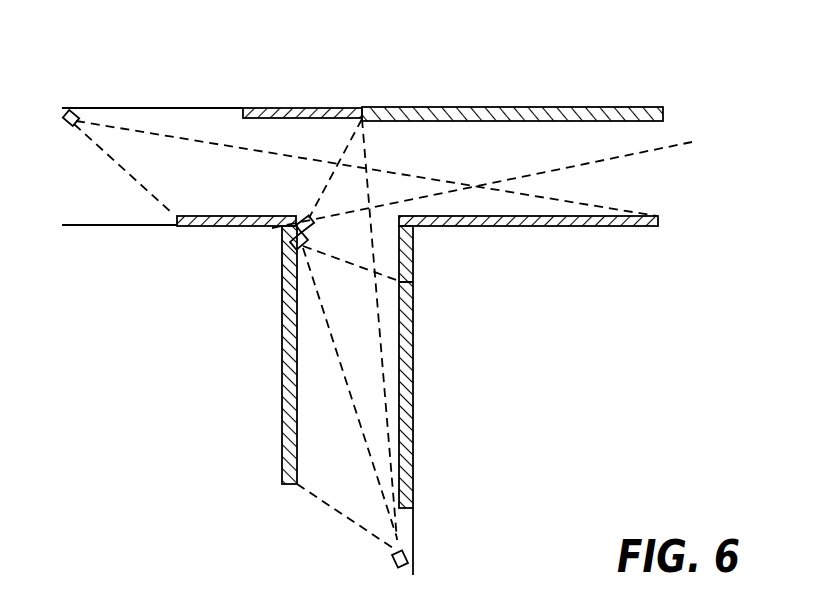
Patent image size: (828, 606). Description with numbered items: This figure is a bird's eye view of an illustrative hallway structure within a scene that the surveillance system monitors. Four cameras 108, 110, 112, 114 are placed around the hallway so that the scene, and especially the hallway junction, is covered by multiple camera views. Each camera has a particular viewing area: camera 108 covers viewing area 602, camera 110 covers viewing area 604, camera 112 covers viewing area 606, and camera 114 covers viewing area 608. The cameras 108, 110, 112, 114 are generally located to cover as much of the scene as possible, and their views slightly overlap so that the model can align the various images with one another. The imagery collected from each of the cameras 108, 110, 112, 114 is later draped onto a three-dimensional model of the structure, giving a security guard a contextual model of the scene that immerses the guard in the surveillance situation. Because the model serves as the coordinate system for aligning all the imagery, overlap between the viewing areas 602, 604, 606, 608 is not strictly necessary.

The camera 108 is at (68, 106).
The camera 110 is at (283, 230).
The camera 112 is at (286, 262).
The camera 114 is at (410, 558).
The viewing area 602 is at (188, 228).
The viewing area 604 is at (465, 107).
The viewing area 606 is at (413, 398).
The viewing area 608 is at (290, 107).